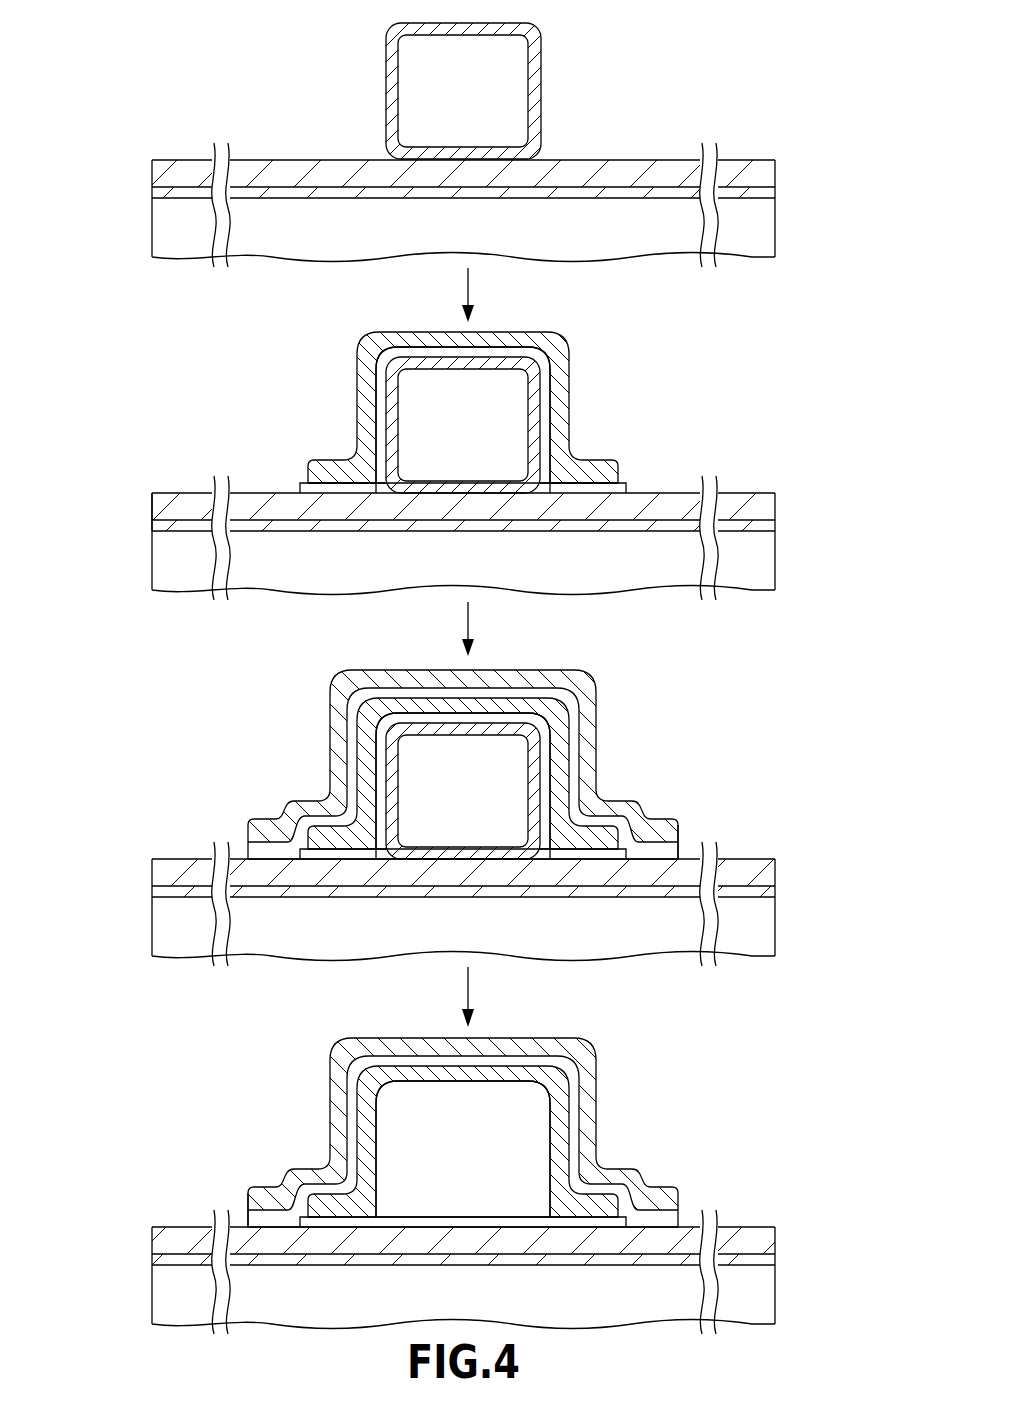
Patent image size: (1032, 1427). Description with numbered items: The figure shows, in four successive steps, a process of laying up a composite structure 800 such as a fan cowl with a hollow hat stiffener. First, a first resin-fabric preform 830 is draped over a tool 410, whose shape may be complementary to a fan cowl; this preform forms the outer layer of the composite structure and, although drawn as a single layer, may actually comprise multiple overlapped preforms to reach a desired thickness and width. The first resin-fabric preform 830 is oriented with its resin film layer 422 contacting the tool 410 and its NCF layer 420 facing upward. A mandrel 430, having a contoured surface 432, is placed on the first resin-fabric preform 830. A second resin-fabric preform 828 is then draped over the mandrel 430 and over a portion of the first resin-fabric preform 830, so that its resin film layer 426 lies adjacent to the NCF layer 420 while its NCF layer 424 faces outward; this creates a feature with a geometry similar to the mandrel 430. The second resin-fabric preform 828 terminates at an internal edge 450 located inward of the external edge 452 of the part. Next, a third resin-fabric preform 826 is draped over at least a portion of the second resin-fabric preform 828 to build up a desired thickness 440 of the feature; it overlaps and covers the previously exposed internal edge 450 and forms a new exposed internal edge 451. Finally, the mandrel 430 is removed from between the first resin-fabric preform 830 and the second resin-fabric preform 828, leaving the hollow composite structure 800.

The tool 410 is at (748, 237).
The NCF layer 420 is at (153, 503).
The resin film layer 422 is at (153, 531).
The NCF layer 424 is at (310, 462).
The resin film layer 426 is at (298, 486).
The mandrel 430 is at (541, 74).
The contoured surface 432 is at (539, 24).
The desired thickness 440 is at (388, 1120).
The internal edge 450 is at (619, 475).
The exposed internal edge 451 is at (679, 834).
The external edge 452 is at (788, 494).
The composite structure 800 is at (290, 1069).
The third resin-fabric preform 826 is at (583, 783).
The second resin-fabric preform 828 is at (577, 399).
The first resin-fabric preform 830 is at (774, 177).